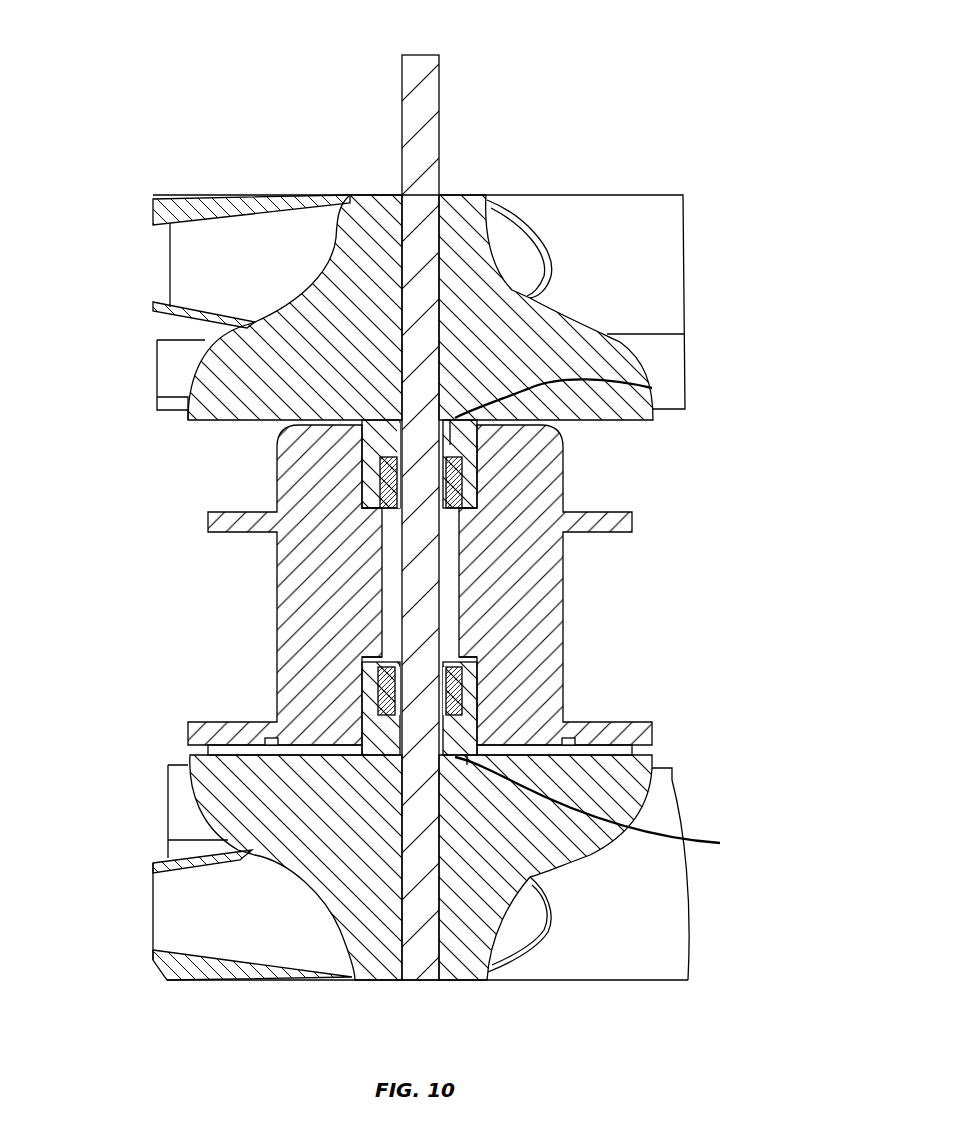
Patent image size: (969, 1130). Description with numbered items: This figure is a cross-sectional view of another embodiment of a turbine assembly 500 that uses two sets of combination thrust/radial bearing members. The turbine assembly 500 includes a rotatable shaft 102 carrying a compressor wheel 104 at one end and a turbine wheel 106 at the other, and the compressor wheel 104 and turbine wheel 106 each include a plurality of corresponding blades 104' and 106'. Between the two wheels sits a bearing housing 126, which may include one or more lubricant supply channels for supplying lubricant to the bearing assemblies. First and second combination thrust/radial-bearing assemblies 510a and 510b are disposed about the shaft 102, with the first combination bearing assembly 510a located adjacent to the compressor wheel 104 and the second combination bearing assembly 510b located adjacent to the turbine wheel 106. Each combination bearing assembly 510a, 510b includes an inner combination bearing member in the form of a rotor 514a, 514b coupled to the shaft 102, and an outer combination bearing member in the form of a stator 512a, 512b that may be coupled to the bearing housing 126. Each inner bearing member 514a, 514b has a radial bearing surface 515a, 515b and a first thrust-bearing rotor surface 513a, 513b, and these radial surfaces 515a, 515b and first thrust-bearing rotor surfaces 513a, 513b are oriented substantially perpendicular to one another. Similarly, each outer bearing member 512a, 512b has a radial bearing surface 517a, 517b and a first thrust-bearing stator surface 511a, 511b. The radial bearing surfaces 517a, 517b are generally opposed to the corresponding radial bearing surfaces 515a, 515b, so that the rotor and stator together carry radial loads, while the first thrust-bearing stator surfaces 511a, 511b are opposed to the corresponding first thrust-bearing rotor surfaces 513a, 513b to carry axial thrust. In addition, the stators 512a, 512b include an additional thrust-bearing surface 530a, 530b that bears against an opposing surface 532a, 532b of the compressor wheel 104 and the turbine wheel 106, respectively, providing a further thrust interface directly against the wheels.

The turbine assembly 500 is at (722, 64).
The rotatable shaft 102 is at (428, 93).
The compressor wheel 104 is at (487, 286).
The blades 104' is at (727, 275).
The turbine wheel 106 is at (448, 860).
The blades 106' is at (722, 943).
The bearing housing 126 is at (441, 590).
The first combination thrust/radial-bearing assembly 510a is at (452, 464).
The second combination thrust/radial-bearing assembly 510b is at (426, 736).
The stator 512a is at (362, 423).
The stator 512b is at (362, 663).
The rotor 514a is at (385, 457).
The rotor 514b is at (385, 716).
The radial bearing surface 515a is at (441, 578).
The radial bearing surface 517a is at (355, 495).
The radial bearing surface 515b is at (271, 692).
The radial bearing surface 517b is at (271, 692).
The first thrust-bearing rotor surface 513a is at (627, 378).
The first thrust-bearing stator surface 511a is at (452, 440).
The first thrust-bearing rotor surface 513b is at (426, 810).
The first thrust-bearing stator surface 511b is at (398, 740).
The additional thrust-bearing surface 530a is at (638, 397).
The opposing surface 532a is at (652, 388).
The additional thrust-bearing surface 530b is at (667, 804).
The opposing surface 532b is at (720, 843).